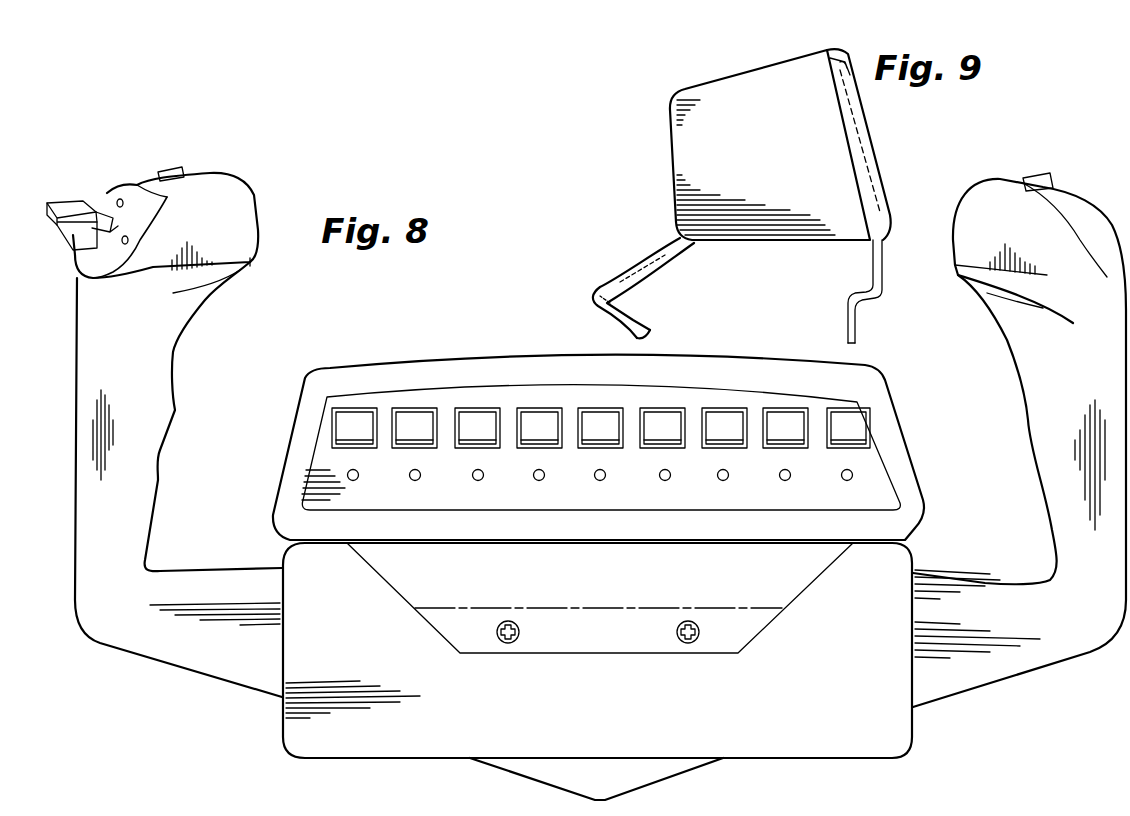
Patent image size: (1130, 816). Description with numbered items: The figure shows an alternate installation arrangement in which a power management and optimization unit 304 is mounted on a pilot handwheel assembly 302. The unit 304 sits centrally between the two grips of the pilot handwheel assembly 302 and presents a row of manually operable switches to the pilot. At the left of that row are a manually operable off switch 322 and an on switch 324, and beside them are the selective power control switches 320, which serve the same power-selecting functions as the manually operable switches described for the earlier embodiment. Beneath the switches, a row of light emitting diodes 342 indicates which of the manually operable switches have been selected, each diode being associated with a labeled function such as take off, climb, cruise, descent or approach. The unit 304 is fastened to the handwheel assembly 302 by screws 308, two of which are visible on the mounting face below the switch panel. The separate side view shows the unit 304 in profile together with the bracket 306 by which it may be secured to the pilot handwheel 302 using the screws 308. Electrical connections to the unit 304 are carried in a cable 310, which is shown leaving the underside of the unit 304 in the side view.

In FIG. 8, the pilot handwheel assembly 302 is at (200, 695).
In FIG. 8, the power management and optimization unit 304 is at (521, 337).
In FIG. 9, the power management and optimization unit 304 is at (734, 147).
In FIG. 9, the bracket 306 is at (872, 268).
In FIG. 8, the screws 308 is at (517, 640).
In FIG. 9, the cable 310 is at (632, 272).
In FIG. 8, the selective power control switches 320 is at (468, 417).
In FIG. 8, the off switch 322 is at (350, 410).
In FIG. 8, the on switch 324 is at (408, 410).
In FIG. 8, the light emitting diodes 342 is at (853, 470).